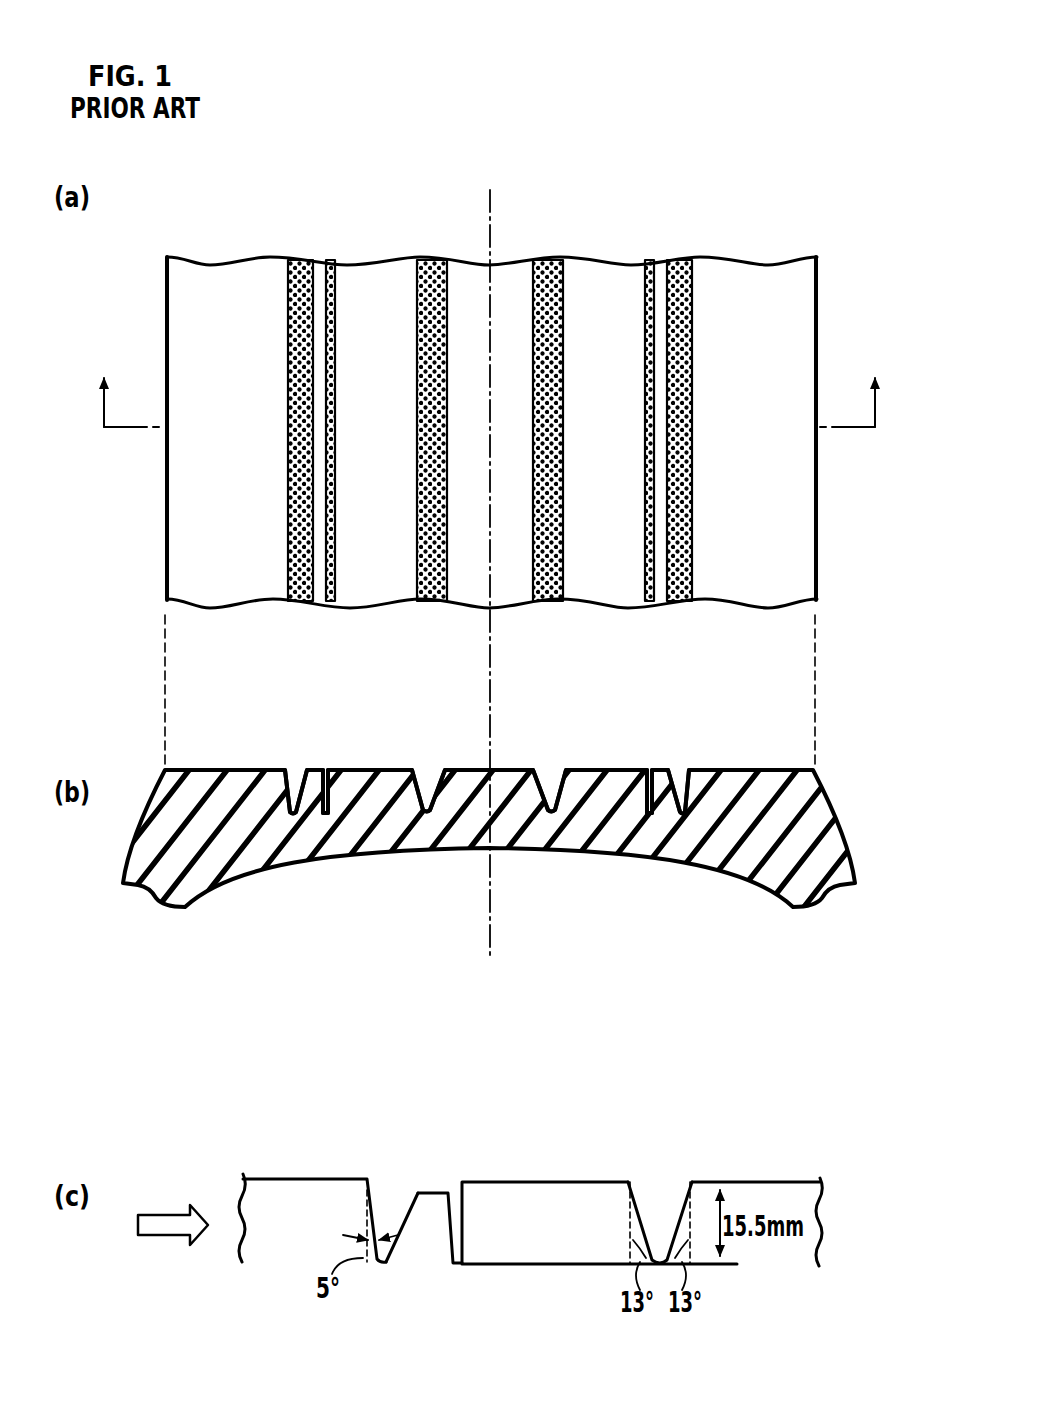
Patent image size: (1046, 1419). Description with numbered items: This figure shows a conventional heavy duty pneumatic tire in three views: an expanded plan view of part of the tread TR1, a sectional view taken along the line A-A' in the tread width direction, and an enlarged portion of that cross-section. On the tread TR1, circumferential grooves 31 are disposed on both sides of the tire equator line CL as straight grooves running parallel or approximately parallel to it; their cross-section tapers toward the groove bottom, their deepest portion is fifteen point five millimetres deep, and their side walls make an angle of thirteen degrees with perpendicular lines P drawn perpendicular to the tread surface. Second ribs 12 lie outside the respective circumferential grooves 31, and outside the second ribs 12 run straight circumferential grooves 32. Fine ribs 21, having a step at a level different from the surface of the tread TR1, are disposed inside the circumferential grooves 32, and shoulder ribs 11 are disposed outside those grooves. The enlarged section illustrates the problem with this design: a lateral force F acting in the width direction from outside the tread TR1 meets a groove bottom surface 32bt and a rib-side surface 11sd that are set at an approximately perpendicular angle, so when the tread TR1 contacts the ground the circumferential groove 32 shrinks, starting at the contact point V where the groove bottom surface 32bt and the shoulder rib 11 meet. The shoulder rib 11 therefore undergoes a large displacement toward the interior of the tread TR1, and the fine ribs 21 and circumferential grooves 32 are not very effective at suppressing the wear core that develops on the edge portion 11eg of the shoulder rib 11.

The shoulder rib 11 is at (238, 268).
The second rib 12 is at (372, 272).
The fine rib 21 is at (326, 270).
The circumferential groove 31 is at (430, 270).
The circumferential groove 32 is at (300, 272).
The tread TR1 is at (712, 197).
The equator line CL is at (487, 190).
The line A-A' A is at (494, 386).
The perpendicular line P is at (365, 1268).
The lateral force F is at (163, 1238).
The edge portion 11eg is at (376, 1188).
The rib-side surface 11sd is at (380, 1212).
The groove bottom surface 32bt is at (393, 1267).
The contact point V is at (382, 1265).